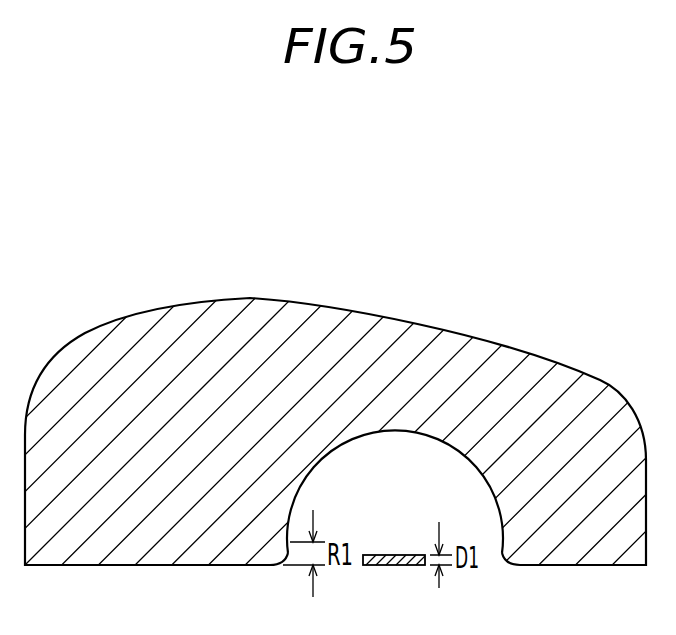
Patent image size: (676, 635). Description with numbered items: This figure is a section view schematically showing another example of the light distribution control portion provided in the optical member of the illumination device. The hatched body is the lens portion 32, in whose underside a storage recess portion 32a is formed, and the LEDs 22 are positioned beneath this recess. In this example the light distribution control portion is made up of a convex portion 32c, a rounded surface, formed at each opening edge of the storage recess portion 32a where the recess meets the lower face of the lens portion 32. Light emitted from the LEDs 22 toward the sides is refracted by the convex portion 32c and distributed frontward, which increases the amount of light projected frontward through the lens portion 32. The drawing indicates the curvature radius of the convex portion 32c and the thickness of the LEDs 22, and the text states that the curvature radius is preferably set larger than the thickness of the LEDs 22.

The lens portion 32 is at (443, 345).
The storage recess portion 32a is at (380, 460).
The convex portion 32c is at (285, 563).
The LEDs 22 is at (387, 567).